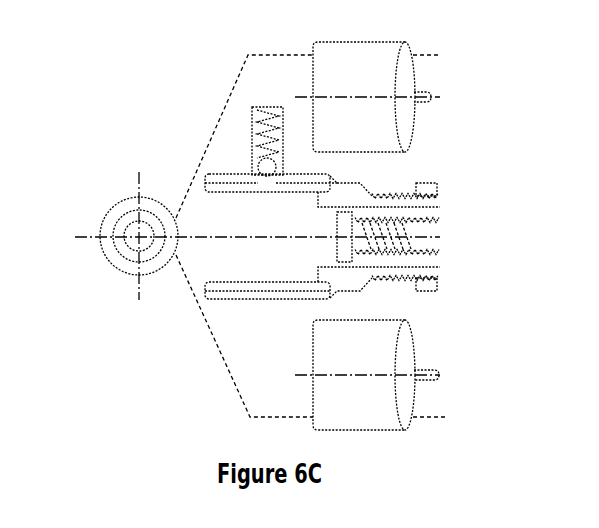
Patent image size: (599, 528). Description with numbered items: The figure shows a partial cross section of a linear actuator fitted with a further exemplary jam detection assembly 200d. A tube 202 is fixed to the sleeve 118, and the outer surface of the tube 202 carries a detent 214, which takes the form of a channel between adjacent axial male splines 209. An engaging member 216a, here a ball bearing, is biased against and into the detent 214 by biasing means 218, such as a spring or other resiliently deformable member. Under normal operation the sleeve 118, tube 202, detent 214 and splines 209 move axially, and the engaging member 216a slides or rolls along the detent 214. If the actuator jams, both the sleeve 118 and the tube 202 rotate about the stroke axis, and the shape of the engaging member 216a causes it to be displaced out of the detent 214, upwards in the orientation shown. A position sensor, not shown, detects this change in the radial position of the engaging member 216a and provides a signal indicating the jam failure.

The sleeve 118 is at (432, 202).
The jam detection assembly 200d is at (235, 322).
The tube 202 is at (217, 292).
The axial male splines 209 is at (233, 293).
The detent 214 is at (262, 178).
The engaging member 216a is at (263, 163).
The biasing means 218 is at (275, 127).